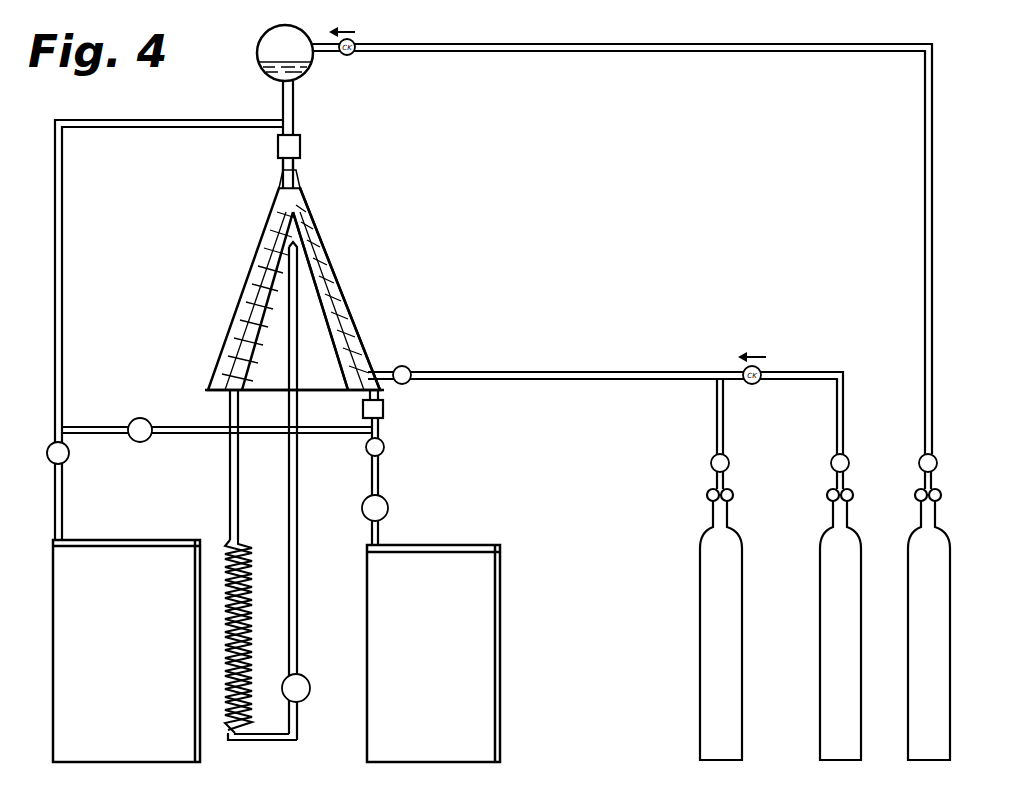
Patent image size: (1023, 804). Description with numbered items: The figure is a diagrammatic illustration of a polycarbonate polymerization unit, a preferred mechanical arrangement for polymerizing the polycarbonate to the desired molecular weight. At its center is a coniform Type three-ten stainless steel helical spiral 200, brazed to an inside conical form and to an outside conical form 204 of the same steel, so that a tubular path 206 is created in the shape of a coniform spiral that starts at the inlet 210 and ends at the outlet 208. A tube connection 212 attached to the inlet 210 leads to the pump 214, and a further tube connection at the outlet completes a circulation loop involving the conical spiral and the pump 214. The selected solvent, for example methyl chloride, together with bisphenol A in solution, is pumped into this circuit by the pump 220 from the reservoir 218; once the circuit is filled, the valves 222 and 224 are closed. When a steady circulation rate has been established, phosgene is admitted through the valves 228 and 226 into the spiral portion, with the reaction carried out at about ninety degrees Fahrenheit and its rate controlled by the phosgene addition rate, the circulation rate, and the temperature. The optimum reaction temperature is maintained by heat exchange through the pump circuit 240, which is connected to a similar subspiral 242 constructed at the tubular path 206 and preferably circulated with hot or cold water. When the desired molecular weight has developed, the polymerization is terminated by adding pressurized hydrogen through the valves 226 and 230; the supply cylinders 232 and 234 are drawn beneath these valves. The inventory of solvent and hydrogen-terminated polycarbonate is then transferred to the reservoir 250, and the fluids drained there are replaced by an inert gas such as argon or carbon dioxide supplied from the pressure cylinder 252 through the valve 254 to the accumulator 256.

The coniform helical spiral 200 is at (305, 206).
The outside conical form 204 is at (337, 281).
The tubular path 206 is at (344, 314).
The outlet 208 is at (384, 388).
The inlet 210 is at (292, 183).
The tube connection 212 is at (302, 144).
The pump 214 is at (160, 397).
The reservoir 218 is at (503, 579).
The pump 220 is at (387, 504).
The valve 222 is at (385, 447).
The valve 224 is at (70, 455).
The valve 226 is at (410, 367).
The valve 228 is at (710, 464).
The valve 230 is at (830, 464).
The gas cylinder 232 is at (716, 630).
The gas cylinder 234 is at (826, 630).
The pump circuit 240 is at (299, 677).
The subspiral 242 is at (255, 372).
The reservoir 250 is at (168, 513).
The pressure cylinder 252 is at (945, 618).
The valve 254 is at (939, 463).
The accumulator 256 is at (315, 68).